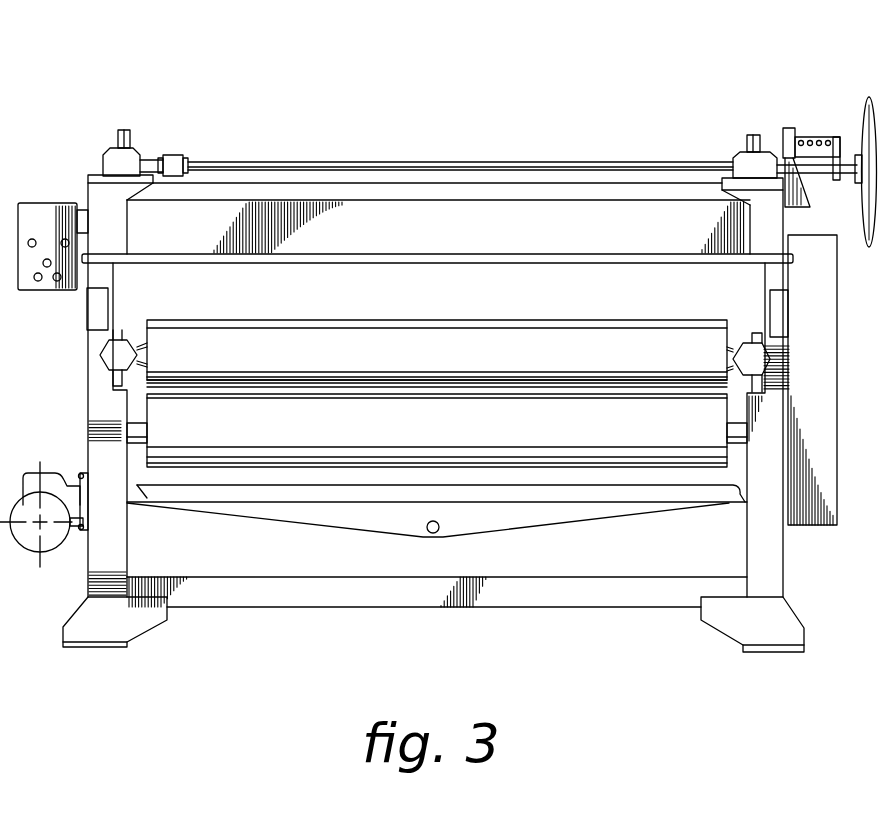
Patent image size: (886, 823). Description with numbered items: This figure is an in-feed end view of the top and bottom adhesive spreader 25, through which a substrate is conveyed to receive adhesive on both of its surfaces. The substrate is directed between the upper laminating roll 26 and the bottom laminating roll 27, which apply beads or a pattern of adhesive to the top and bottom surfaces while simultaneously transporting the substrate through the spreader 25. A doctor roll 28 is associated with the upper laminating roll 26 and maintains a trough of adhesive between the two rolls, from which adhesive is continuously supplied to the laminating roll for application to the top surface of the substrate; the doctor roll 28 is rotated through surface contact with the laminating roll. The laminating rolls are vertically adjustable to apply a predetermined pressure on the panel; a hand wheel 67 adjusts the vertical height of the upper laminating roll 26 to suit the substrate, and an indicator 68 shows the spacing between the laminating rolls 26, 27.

The top and bottom adhesive spreader 25 is at (447, 660).
The upper laminating roll 26 is at (627, 322).
The bottom laminating roll 27 is at (674, 463).
The doctor roll 28 is at (688, 334).
The hand wheel 67 is at (876, 97).
The indicator 68 is at (803, 137).